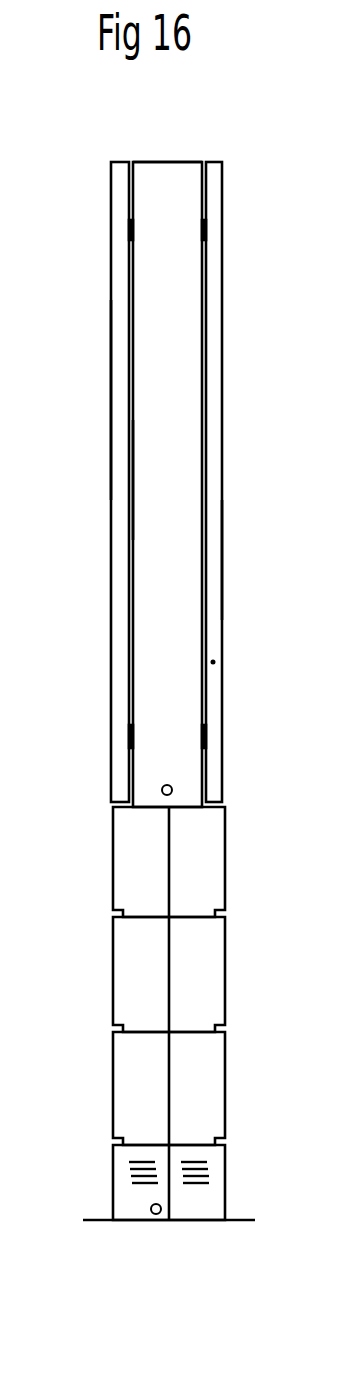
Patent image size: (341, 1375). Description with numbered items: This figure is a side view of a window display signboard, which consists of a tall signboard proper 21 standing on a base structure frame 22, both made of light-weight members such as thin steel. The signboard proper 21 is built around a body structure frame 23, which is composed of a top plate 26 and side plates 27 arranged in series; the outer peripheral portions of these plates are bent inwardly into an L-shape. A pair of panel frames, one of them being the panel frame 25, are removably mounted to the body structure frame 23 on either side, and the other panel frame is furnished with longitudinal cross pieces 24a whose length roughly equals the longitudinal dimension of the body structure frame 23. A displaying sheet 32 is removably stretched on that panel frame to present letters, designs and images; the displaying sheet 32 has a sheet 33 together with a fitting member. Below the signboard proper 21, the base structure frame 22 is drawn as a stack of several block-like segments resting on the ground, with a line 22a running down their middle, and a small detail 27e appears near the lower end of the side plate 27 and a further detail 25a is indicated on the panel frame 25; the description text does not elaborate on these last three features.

The signboard proper 21 is at (176, 452).
The base structure frame 22 is at (227, 903).
The block joint line 22a is at (169, 950).
The body structure frame 23 is at (178, 380).
The longitudinal cross piece 24a is at (216, 662).
The panel frame 25 is at (118, 255).
The rail edge 25a is at (111, 377).
The top plate 26 is at (163, 161).
The side plate 27 is at (174, 480).
The pin 27e is at (172, 789).
The displaying sheet 32 is at (222, 278).
The sheet 33 is at (215, 568).